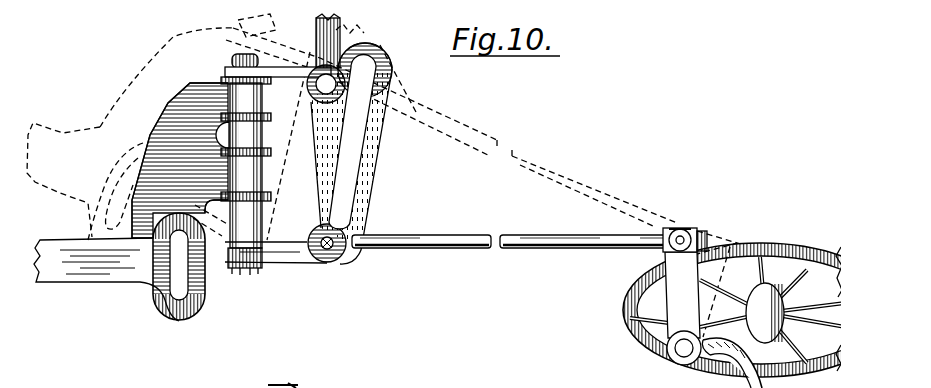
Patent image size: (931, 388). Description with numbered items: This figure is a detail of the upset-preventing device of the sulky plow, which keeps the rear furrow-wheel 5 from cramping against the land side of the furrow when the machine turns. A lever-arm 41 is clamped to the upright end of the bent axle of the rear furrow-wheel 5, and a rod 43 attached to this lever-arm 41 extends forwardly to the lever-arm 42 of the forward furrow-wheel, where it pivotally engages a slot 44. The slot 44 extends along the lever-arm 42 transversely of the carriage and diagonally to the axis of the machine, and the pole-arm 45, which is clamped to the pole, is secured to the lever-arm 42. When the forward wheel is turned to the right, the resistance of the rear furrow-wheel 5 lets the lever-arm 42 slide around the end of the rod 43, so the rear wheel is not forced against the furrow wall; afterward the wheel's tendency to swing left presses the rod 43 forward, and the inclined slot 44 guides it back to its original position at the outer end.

The pole-arm 45 is at (58, 240).
The slot 44 is at (358, 178).
The lever-arm 42 is at (366, 208).
The rod 43 is at (466, 235).
The lever-arm 41 is at (684, 229).
The rear furrow-wheel 5 is at (781, 243).